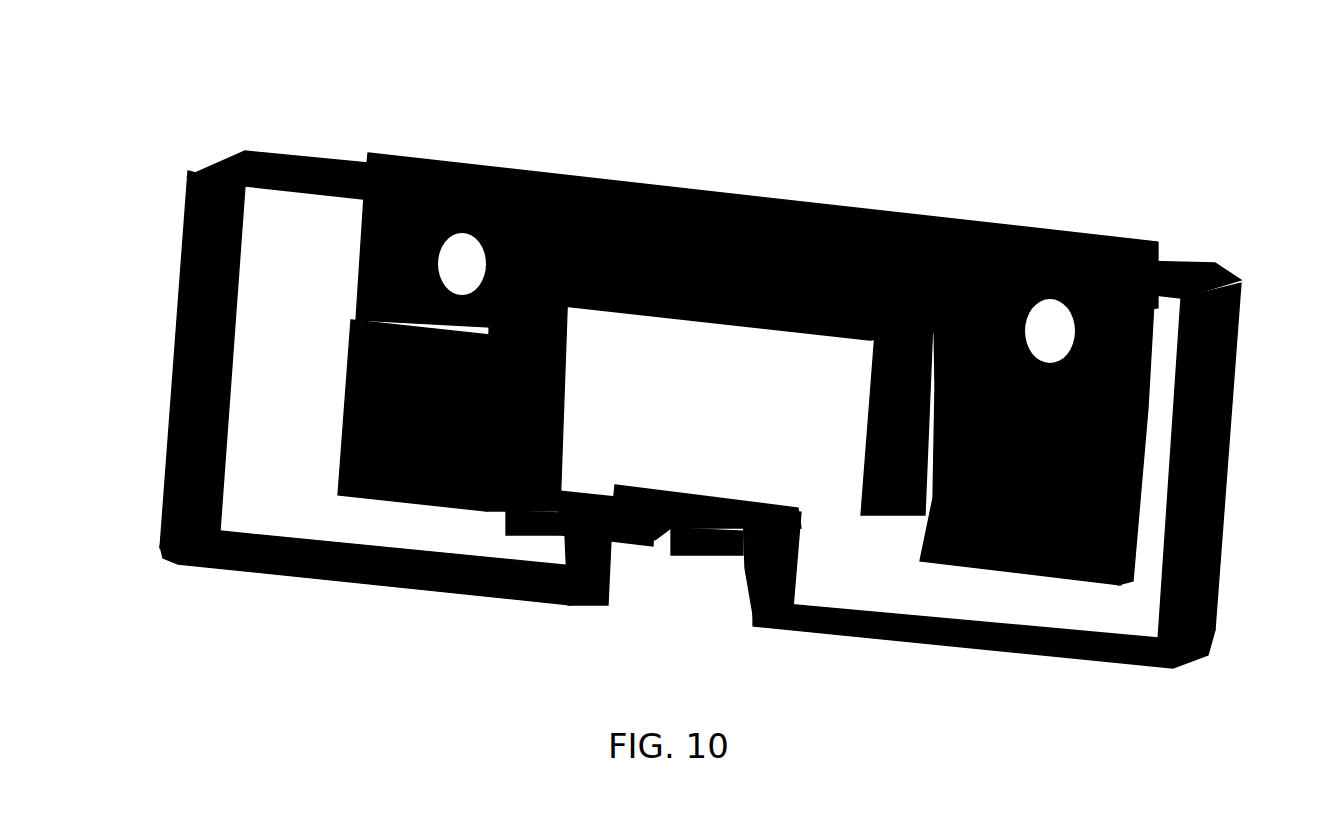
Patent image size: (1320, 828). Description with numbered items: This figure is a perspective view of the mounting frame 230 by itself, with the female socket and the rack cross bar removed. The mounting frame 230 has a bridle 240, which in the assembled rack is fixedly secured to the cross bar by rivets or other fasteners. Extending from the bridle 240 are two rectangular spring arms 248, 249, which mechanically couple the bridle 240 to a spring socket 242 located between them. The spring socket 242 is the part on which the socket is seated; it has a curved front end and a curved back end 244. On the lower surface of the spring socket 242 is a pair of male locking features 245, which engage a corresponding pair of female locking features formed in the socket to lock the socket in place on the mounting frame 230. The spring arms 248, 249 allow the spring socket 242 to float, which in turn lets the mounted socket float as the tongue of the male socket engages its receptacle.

The mounting frame 230 is at (1140, 98).
The bridle 240 is at (760, 190).
The spring socket 242 is at (690, 458).
The curved back end 244 is at (605, 507).
The male locking feature 245 is at (533, 524).
The rectangular spring arm 248 is at (1217, 365).
The rectangular spring arm 249 is at (178, 287).